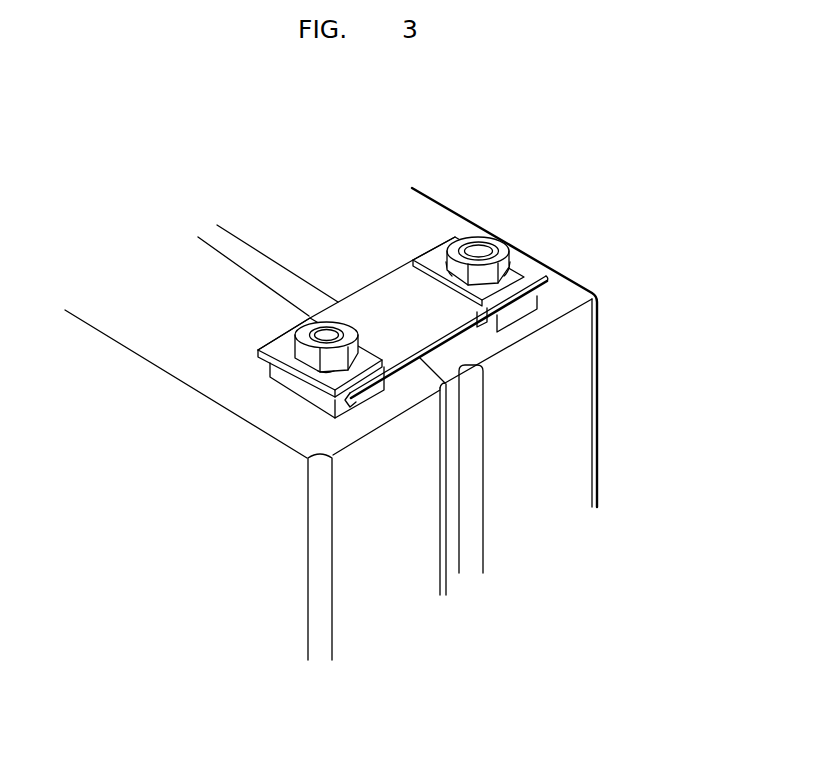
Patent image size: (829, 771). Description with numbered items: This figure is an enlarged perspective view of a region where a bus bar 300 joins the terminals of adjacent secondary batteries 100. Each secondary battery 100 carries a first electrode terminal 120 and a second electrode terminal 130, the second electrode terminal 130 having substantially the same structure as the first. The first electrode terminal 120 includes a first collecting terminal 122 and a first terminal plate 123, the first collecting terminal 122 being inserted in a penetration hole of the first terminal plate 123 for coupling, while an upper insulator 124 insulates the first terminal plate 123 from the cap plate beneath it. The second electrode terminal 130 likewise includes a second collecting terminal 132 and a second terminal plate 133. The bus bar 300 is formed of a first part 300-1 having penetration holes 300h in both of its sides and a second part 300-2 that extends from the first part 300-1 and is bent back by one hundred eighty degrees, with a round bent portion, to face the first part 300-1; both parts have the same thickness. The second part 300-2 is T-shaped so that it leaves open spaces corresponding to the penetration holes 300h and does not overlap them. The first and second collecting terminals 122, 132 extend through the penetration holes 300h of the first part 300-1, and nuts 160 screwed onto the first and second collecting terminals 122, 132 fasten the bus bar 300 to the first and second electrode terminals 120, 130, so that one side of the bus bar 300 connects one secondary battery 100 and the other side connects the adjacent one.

The secondary battery 100 is at (588, 412).
The first electrode terminal 120 is at (302, 326).
The first collecting terminal 122 is at (322, 338).
The first terminal plate 123 is at (288, 380).
The upper insulator 124 is at (366, 402).
The second electrode terminal 130 is at (471, 212).
The second collecting terminal 132 is at (485, 248).
The second terminal plate 133 is at (510, 315).
The nut 160 is at (507, 263).
The bus bar 300 is at (397, 257).
The first part 300-1 is at (432, 250).
The second part 300-2 is at (367, 293).
The penetration hole 300h is at (325, 368).